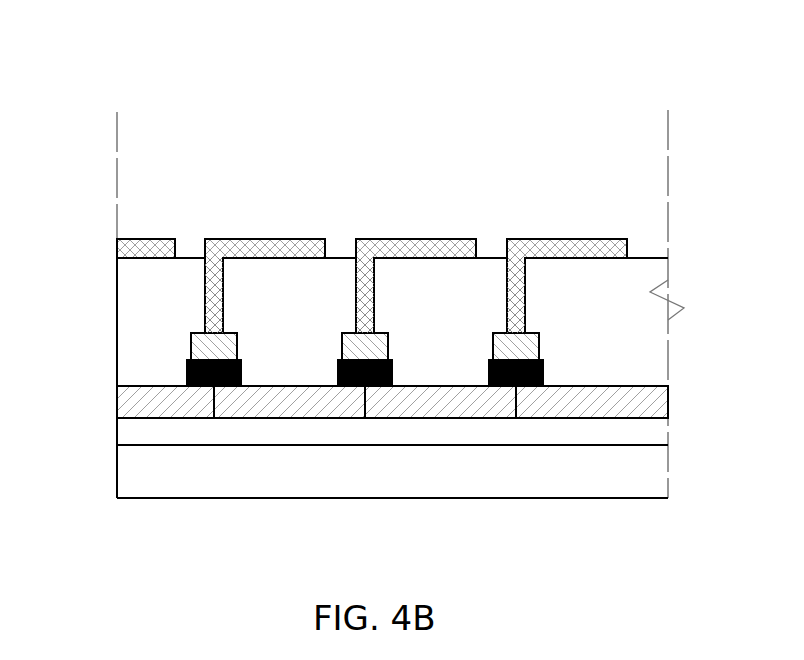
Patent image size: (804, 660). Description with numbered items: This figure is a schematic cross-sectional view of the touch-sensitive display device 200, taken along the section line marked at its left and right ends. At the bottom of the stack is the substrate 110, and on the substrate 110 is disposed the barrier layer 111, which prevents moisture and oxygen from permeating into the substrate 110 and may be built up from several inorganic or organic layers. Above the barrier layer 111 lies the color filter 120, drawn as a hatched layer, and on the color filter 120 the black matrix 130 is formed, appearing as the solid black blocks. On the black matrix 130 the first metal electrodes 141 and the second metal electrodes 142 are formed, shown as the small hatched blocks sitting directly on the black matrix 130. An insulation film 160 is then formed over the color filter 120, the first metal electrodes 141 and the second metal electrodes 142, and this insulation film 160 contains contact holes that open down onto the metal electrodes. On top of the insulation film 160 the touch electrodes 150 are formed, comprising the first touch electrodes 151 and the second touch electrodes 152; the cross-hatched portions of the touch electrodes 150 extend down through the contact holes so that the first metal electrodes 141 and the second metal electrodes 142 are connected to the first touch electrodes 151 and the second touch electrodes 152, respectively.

The touch-sensitive display device 200 is at (625, 44).
The substrate 110 is at (127, 469).
The barrier layer 111 is at (127, 437).
The color filter 120 is at (438, 398).
The black matrix 130 is at (188, 367).
The first metal electrodes 141 is at (362, 348).
The second metal electrodes 142 is at (202, 347).
The touch electrodes 150 is at (362, 127).
The first touch electrodes 151 is at (368, 245).
The second touch electrodes 152 is at (289, 245).
The insulation film 160 is at (127, 284).